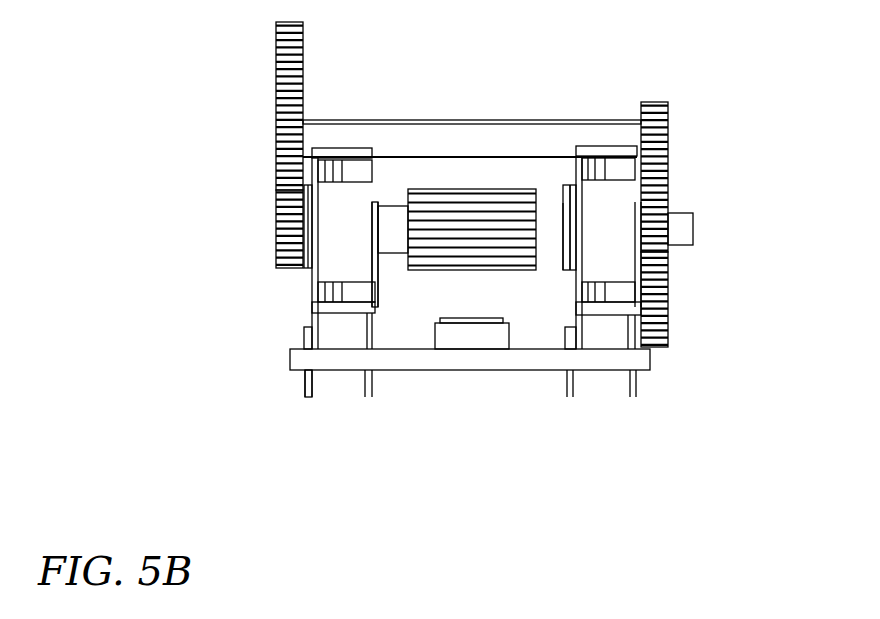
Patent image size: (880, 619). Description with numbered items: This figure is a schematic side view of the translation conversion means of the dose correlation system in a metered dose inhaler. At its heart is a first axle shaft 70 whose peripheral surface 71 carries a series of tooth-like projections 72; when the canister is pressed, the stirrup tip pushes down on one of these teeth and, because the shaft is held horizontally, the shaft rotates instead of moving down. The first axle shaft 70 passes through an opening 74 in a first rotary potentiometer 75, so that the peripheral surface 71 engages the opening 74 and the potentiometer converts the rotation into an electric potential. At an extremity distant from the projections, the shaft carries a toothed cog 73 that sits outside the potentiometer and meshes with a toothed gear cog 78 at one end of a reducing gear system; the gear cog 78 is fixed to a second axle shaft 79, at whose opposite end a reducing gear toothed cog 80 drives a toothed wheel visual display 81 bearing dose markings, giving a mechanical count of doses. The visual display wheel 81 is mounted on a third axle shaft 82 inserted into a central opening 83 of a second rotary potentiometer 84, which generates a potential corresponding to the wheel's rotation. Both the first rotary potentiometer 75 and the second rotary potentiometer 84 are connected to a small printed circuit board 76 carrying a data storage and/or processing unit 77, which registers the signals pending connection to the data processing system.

The first axle shaft 70 is at (379, 258).
The peripheral surface 71 is at (395, 215).
The tooth-like projections 72 is at (507, 362).
The toothed cog 73 is at (285, 245).
The opening 74 is at (378, 208).
The first rotary potentiometer 75 is at (333, 265).
The printed circuit board 76 is at (323, 362).
The data processing unit 77 is at (453, 342).
The toothed gear cog 78 is at (282, 73).
The second axle shaft 79 is at (485, 132).
The reducing gear toothed cog 80 is at (657, 100).
The toothed wheel visual display 81 is at (672, 292).
The third axle shaft 82 is at (685, 228).
The central opening 83 is at (582, 262).
The second rotary potentiometer 84 is at (607, 265).